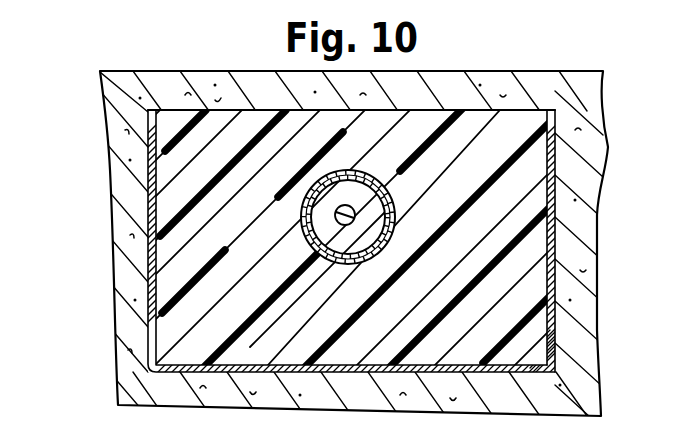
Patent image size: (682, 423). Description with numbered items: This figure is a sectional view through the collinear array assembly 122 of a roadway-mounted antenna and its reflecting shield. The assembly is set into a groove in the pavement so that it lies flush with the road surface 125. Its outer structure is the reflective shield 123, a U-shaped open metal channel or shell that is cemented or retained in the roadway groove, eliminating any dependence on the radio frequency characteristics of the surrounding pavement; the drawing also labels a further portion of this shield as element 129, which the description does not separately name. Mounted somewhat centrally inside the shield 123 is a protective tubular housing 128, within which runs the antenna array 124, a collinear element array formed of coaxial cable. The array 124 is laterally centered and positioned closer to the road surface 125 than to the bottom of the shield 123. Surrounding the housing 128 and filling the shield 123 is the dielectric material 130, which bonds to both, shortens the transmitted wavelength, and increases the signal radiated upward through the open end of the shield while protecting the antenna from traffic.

The collinear array assembly 122 is at (162, 387).
The reflective shield 123 is at (557, 348).
The antenna array 124 is at (303, 221).
The road surface 125 is at (212, 70).
The protective tubular housing 128 is at (392, 207).
The liner bottom 129 is at (418, 362).
The dielectric material 130 is at (457, 291).